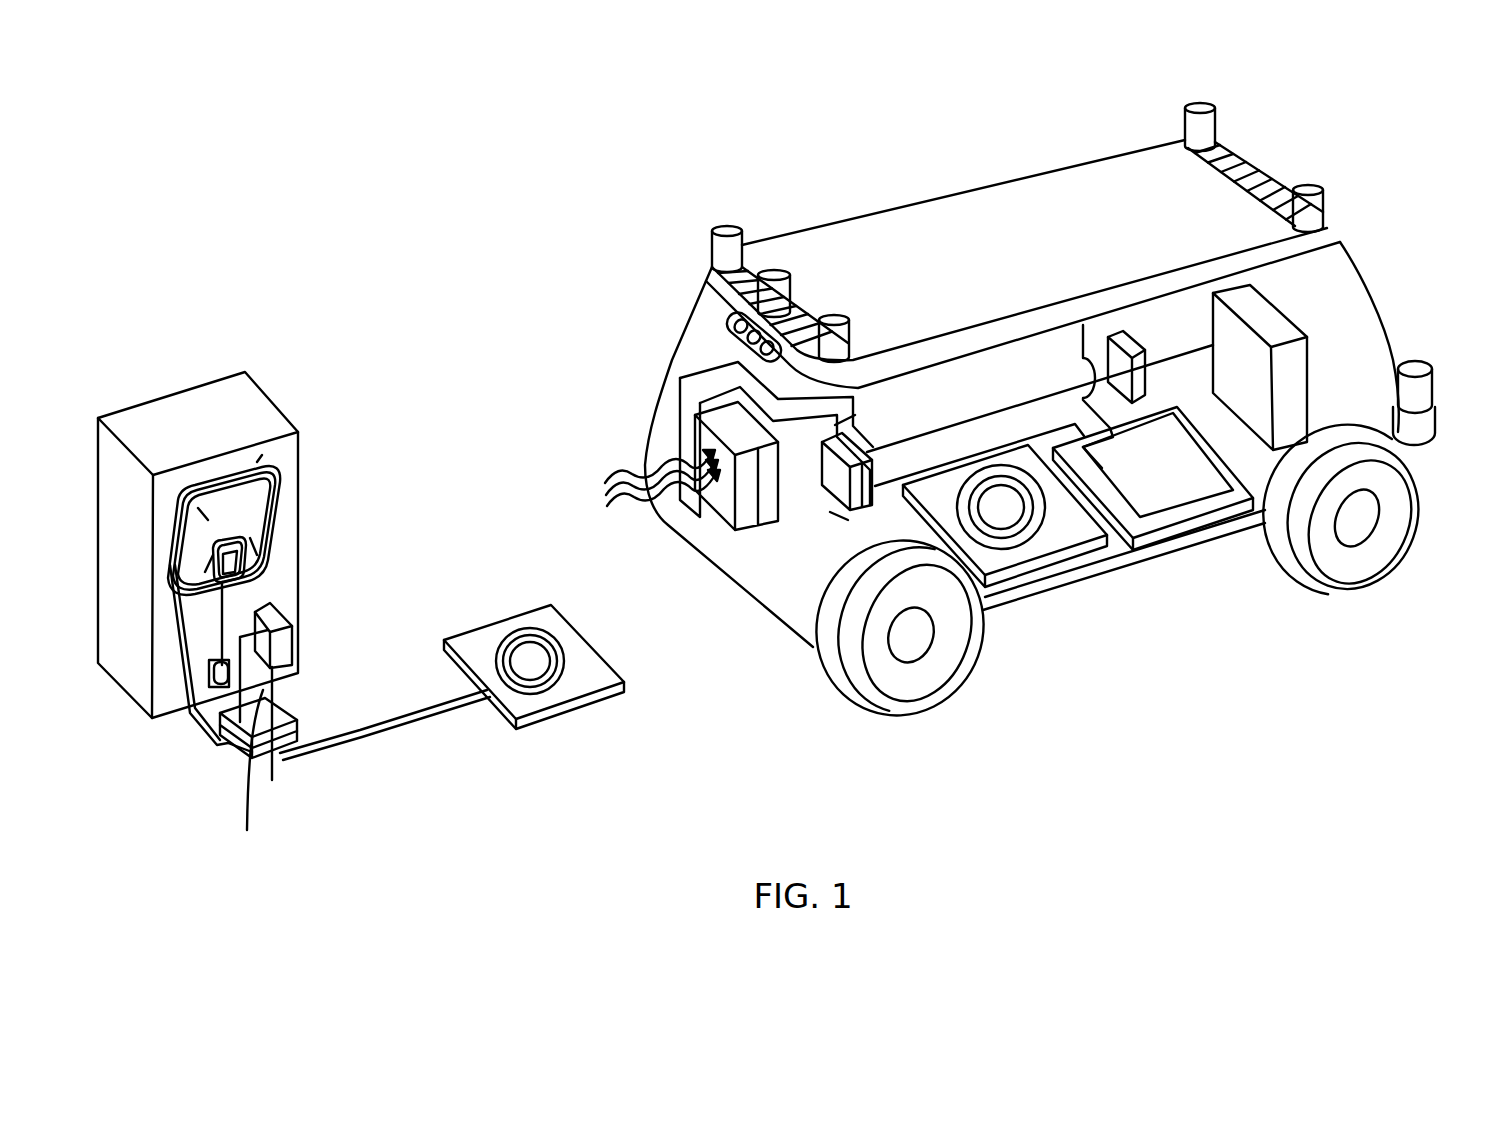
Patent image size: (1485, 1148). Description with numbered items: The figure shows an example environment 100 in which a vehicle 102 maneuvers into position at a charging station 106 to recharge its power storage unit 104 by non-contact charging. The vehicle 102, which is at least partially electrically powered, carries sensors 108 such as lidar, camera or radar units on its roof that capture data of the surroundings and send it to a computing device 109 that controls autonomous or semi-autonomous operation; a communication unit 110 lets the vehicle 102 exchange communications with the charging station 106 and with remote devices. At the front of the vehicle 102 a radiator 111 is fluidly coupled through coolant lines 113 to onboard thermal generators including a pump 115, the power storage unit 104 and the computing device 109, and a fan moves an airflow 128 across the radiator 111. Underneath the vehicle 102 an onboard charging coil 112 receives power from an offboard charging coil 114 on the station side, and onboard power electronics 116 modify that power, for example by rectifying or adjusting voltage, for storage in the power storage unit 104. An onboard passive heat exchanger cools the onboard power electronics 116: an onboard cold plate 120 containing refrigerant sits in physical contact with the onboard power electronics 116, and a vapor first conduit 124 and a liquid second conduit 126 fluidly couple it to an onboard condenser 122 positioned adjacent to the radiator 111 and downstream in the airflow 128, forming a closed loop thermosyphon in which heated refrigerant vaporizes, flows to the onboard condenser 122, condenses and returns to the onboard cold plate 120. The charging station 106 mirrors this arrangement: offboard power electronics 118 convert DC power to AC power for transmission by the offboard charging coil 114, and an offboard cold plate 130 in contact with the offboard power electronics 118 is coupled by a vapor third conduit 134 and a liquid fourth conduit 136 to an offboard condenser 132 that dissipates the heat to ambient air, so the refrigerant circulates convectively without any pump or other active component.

The environment 100 is at (448, 248).
The vehicle 102 is at (938, 212).
The power storage unit 104 is at (1203, 517).
The charging station 106 is at (197, 402).
The sensors 108 is at (718, 252).
The computing device 109 is at (1272, 318).
The communication unit 110 is at (782, 296).
The radiator 111 is at (680, 513).
The onboard charging coil 112 is at (1092, 543).
The coolant lines 113 is at (930, 427).
The offboard charging coil 114 is at (467, 647).
The pump 115 is at (1128, 345).
The onboard power electronics 116 is at (868, 502).
The offboard power electronics 118 is at (233, 748).
The onboard cold plate 120 is at (867, 488).
The onboard condenser 122 is at (723, 530).
The first conduit 124 is at (836, 426).
The second conduit 126 is at (830, 512).
The airflow 128 is at (627, 486).
The offboard cold plate 130 is at (280, 722).
The offboard condenser 132 is at (280, 618).
The third conduit 134 is at (247, 771).
The fourth conduit 136 is at (285, 738).